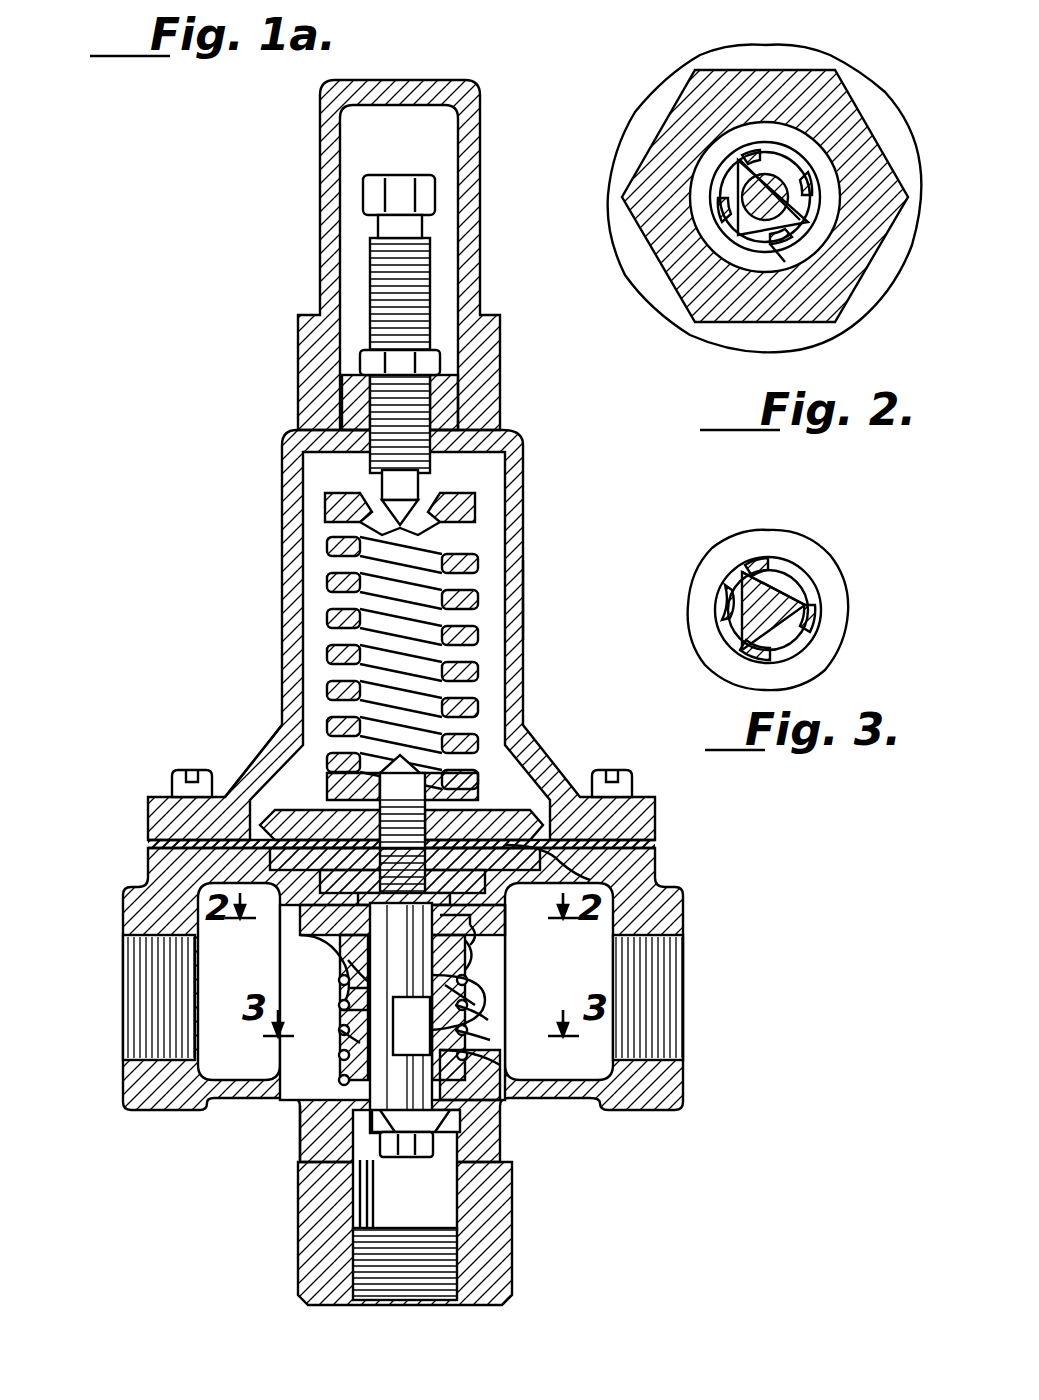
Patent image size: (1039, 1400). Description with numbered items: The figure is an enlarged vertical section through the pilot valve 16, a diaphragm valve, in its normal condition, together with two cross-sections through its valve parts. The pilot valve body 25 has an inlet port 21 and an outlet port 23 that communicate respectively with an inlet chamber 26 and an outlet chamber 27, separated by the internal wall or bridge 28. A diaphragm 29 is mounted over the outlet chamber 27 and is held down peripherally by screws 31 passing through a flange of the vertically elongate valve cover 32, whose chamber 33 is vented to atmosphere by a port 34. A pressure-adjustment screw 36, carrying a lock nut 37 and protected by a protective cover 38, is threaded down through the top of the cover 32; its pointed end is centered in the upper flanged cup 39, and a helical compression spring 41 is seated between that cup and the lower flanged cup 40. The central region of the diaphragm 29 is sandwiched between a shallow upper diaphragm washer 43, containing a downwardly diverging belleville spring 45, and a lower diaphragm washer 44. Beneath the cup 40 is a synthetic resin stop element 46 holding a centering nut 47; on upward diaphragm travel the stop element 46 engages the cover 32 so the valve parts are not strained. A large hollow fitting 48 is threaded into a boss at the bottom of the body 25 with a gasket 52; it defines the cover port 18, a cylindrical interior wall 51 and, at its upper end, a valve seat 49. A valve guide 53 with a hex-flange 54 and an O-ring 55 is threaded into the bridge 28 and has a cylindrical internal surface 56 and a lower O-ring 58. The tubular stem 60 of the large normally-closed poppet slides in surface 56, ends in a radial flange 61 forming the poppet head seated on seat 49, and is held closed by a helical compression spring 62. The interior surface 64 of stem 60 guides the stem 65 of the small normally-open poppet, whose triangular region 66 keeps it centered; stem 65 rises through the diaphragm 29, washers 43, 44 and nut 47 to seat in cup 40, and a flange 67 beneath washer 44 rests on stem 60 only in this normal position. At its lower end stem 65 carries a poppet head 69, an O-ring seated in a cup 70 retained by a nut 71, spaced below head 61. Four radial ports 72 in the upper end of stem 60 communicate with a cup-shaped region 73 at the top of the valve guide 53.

In FIG. 1A, the pilot valve 16 is at (215, 520).
In FIG. 1A, the cover port 18 is at (380, 1290).
In FIG. 1A, the inlet port 21 is at (150, 1000).
In FIG. 1A, the outlet port 23 is at (670, 1005).
In FIG. 1A, the pilot valve body 25 is at (585, 1105).
In FIG. 1A, the inlet chamber 26 is at (242, 1058).
In FIG. 1A, the outlet chamber 27 is at (604, 960).
In FIG. 1A, the bridge 28 is at (268, 938).
In FIG. 2, the bridge 28 is at (640, 275).
In FIG. 1A, the diaphragm 29 is at (640, 843).
In FIG. 1A, the screws 31 is at (175, 780).
In FIG. 1A, the valve cover 32 is at (285, 578).
In FIG. 1A, the chamber 33 is at (268, 790).
In FIG. 1A, the port 34 is at (507, 594).
In FIG. 1A, the pressure-adjustment screw 36 is at (368, 262).
In FIG. 1A, the lock nut 37 is at (360, 362).
In FIG. 1A, the protective cover 38 is at (330, 160).
In FIG. 1A, the upper flanged cup 39 is at (345, 500).
In FIG. 1A, the lower flanged cup 40 is at (330, 788).
In FIG. 1A, the helical compression spring 41 is at (480, 560).
In FIG. 1A, the upper diaphragm washer 43 is at (545, 862).
In FIG. 1A, the lower diaphragm washer 44 is at (452, 895).
In FIG. 1A, the belleville spring 45 is at (340, 832).
In FIG. 1A, the stop element 46 is at (522, 810).
In FIG. 1A, the centering nut 47 is at (445, 830).
In FIG. 1A, the fitting 48 is at (505, 1238).
In FIG. 1A, the valve seat 49 is at (342, 1075).
In FIG. 1A, the cylindrical interior wall 51 is at (455, 1195).
In FIG. 1A, the gasket 52 is at (328, 1162).
In FIG. 1A, the valve guide 53 is at (315, 915).
In FIG. 2, the valve guide 53 is at (800, 70).
In FIG. 1A, the hex-flange 54 is at (300, 950).
In FIG. 2, the hex-flange 54 is at (848, 105).
In FIG. 1A, the O-ring 55 is at (480, 950).
In FIG. 1A, the cylindrical internal surface 56 is at (490, 1010).
In FIG. 2, the cylindrical internal surface 56 is at (800, 165).
In FIG. 1A, the O-ring 58 is at (340, 1010).
In FIG. 1A, the stem 60 is at (488, 985).
In FIG. 2, the stem 60 is at (720, 235).
In FIG. 3, the stem 60 is at (805, 645).
In FIG. 1A, the radial flange 61 is at (488, 1100).
In FIG. 3, the radial flange 61 is at (805, 545).
In FIG. 1A, the helical compression spring 62 is at (340, 1035).
In FIG. 1A, the interior surface 64 is at (492, 1035).
In FIG. 3, the interior surface 64 is at (775, 575).
In FIG. 1A, the stem 65 is at (348, 988).
In FIG. 2, the stem 65 is at (805, 232).
In FIG. 1A, the triangular region 66 is at (502, 1065).
In FIG. 2, the triangular region 66 is at (815, 180).
In FIG. 3, the triangular region 66 is at (800, 592).
In FIG. 1A, the flange 67 is at (462, 915).
In FIG. 1A, the poppet head 69 is at (380, 1122).
In FIG. 1A, the cup 70 is at (470, 1140).
In FIG. 1A, the nut 71 is at (410, 1157).
In FIG. 1A, the ports 72 is at (345, 958).
In FIG. 2, the ports 72 is at (760, 130).
In FIG. 1A, the cup-shaped region 73 is at (475, 928).
In FIG. 2, the cup-shaped region 73 is at (815, 258).